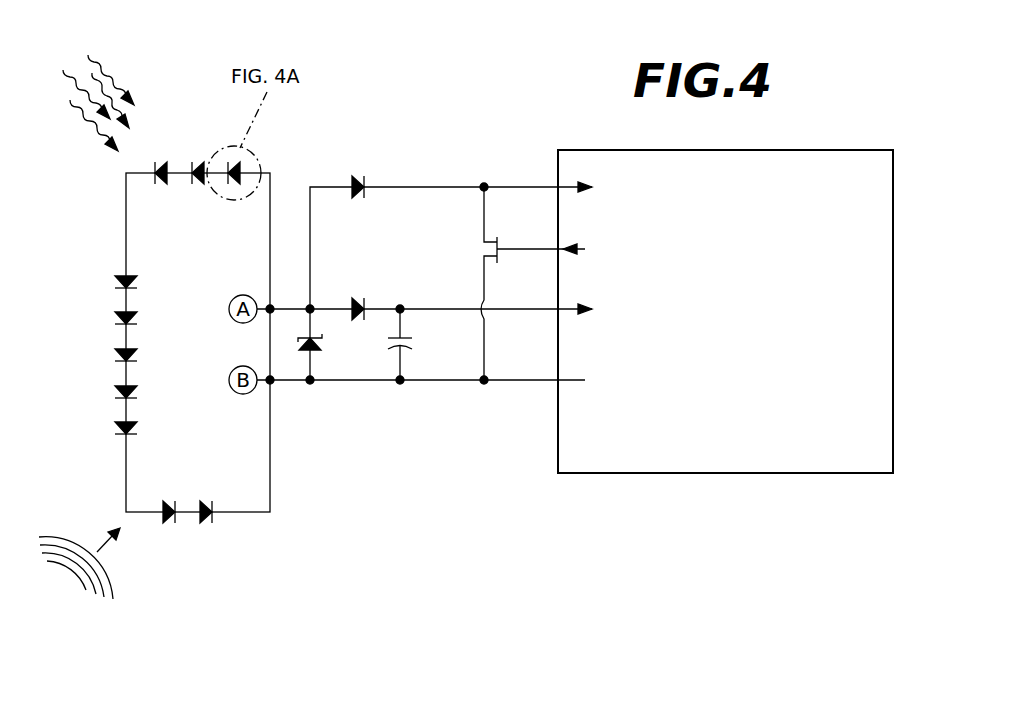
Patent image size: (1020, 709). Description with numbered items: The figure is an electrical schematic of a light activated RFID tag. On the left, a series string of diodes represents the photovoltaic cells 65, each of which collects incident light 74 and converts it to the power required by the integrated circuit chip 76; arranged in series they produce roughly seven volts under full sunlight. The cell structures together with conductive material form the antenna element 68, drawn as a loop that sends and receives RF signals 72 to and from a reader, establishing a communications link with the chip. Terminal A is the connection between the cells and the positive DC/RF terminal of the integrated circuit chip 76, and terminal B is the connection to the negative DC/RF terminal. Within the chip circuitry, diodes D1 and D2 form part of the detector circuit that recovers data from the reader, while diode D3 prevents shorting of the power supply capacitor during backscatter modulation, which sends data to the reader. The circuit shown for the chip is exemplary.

The photovoltaic cell 65 is at (115, 282).
The antenna element 68 is at (239, 530).
The RF signals 72 is at (67, 583).
The light 74 is at (113, 65).
The integrated circuit chip 76 is at (639, 496).
The diode D1 is at (324, 344).
The diode D2 is at (451, 230).
The diode D3 is at (360, 297).